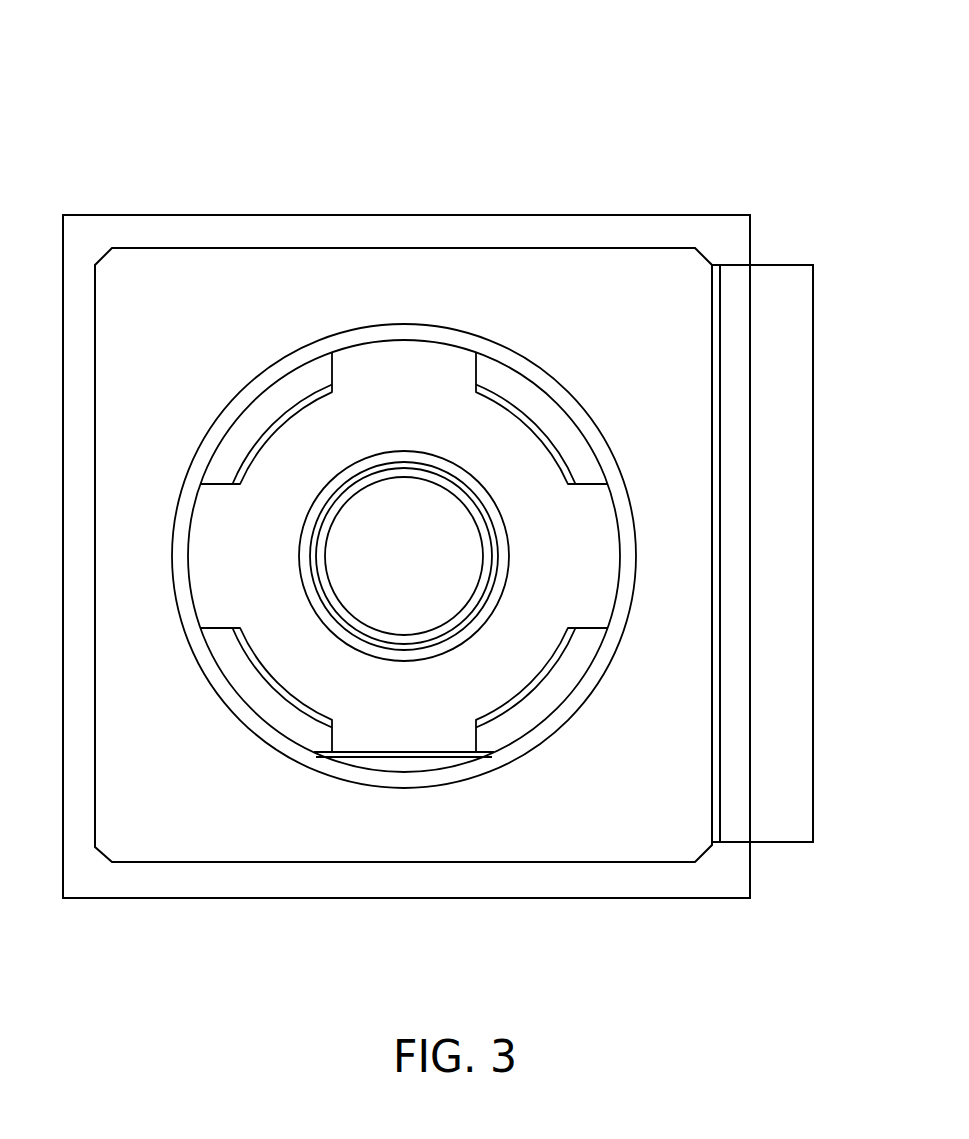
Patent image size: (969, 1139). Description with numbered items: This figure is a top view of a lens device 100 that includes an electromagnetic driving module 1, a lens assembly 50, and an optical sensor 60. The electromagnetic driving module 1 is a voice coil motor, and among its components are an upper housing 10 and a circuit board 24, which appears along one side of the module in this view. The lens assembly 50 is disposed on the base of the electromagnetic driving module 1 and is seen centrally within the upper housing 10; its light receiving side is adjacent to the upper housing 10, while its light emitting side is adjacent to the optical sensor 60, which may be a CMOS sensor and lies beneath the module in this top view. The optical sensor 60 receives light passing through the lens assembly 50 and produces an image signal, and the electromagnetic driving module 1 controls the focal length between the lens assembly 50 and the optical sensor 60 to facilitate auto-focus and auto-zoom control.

The lens device 100 is at (785, 103).
The electromagnetic driving module 1 is at (546, 243).
The upper housing 10 is at (670, 468).
The circuit board 24 is at (783, 717).
The lens assembly 50 is at (597, 567).
The optical sensor 60 is at (93, 235).